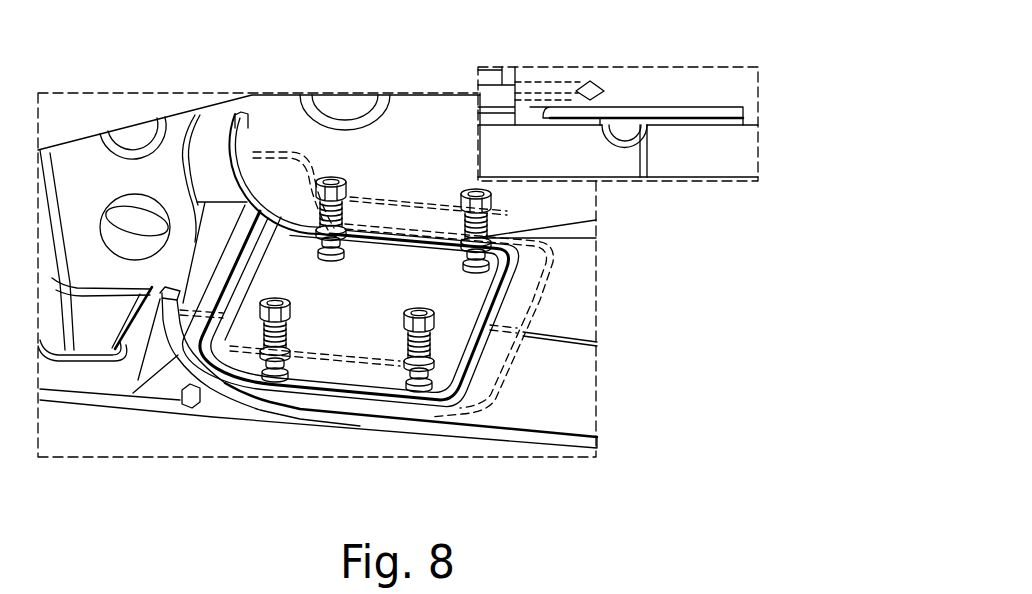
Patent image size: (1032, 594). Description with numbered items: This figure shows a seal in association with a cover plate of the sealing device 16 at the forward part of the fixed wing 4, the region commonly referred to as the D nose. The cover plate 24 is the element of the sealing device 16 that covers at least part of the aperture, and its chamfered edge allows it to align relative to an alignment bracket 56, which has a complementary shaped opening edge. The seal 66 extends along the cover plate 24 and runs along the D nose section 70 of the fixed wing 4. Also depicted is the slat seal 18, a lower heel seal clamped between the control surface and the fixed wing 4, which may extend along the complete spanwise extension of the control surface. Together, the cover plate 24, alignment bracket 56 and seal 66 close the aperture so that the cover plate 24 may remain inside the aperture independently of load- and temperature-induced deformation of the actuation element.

The fixed wing 4 is at (745, 160).
The sealing device 16 is at (348, 183).
The slat seal 18 is at (250, 240).
The cover plate 24 is at (573, 142).
The alignment bracket 56 is at (544, 88).
The seal 66 is at (417, 410).
The D nose section 70 is at (177, 357).